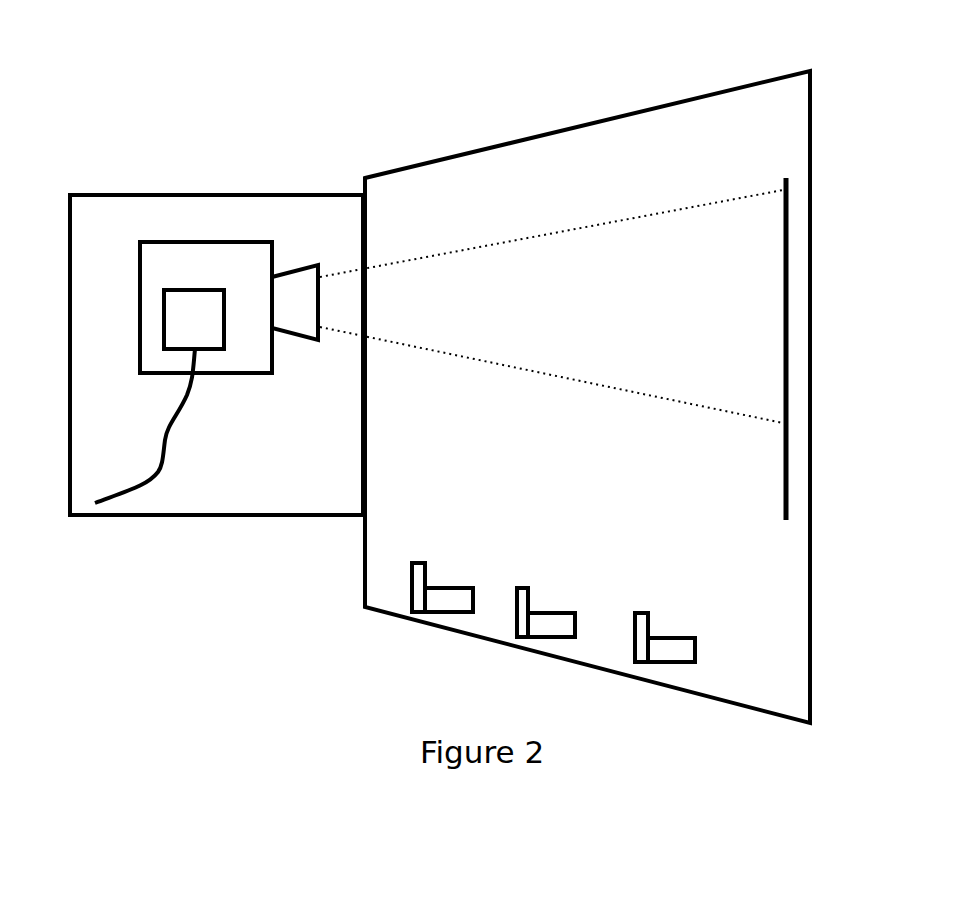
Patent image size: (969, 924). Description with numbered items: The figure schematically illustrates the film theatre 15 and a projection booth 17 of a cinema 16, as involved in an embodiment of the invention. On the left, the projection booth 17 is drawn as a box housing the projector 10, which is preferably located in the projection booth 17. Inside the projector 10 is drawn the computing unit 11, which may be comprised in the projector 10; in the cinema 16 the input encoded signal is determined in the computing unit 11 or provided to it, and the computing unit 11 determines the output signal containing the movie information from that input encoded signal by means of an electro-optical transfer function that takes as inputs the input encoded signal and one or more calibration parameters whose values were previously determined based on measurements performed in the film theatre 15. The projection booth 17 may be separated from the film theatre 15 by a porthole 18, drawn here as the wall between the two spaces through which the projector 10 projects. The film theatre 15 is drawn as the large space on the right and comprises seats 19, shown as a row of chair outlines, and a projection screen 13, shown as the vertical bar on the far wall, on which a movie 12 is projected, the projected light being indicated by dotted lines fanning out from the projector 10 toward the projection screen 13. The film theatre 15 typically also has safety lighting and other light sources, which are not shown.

The projector 10 is at (158, 242).
The computing unit 11 is at (196, 290).
The movie 12 is at (740, 289).
The projection screen 13 is at (784, 473).
The film theatre 15 is at (517, 163).
The cinema 16 is at (336, 140).
The projection booth 17 is at (93, 217).
The porthole 18 is at (363, 353).
The seats 19 is at (518, 588).